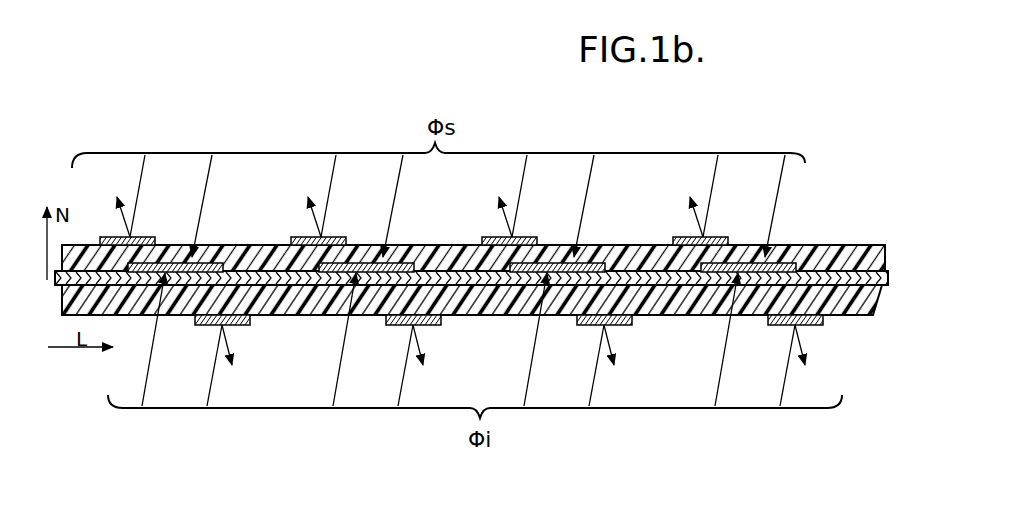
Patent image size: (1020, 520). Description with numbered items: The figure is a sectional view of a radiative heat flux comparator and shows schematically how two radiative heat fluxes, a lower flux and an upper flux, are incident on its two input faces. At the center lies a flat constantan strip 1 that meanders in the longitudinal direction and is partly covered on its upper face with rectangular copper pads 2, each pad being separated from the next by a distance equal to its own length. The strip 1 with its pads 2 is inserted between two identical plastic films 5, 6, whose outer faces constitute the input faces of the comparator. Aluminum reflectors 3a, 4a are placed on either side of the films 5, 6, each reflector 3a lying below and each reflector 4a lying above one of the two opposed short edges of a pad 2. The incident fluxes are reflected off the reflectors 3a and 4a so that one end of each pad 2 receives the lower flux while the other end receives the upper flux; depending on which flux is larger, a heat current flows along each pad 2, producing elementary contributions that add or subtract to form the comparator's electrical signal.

The flat strip 1 is at (825, 277).
The rectangular copper pads 2 is at (773, 268).
The aluminum reflector 3a is at (787, 322).
The aluminum reflector 4a is at (708, 243).
The plastic film 5 is at (845, 295).
The plastic film 6 is at (870, 253).